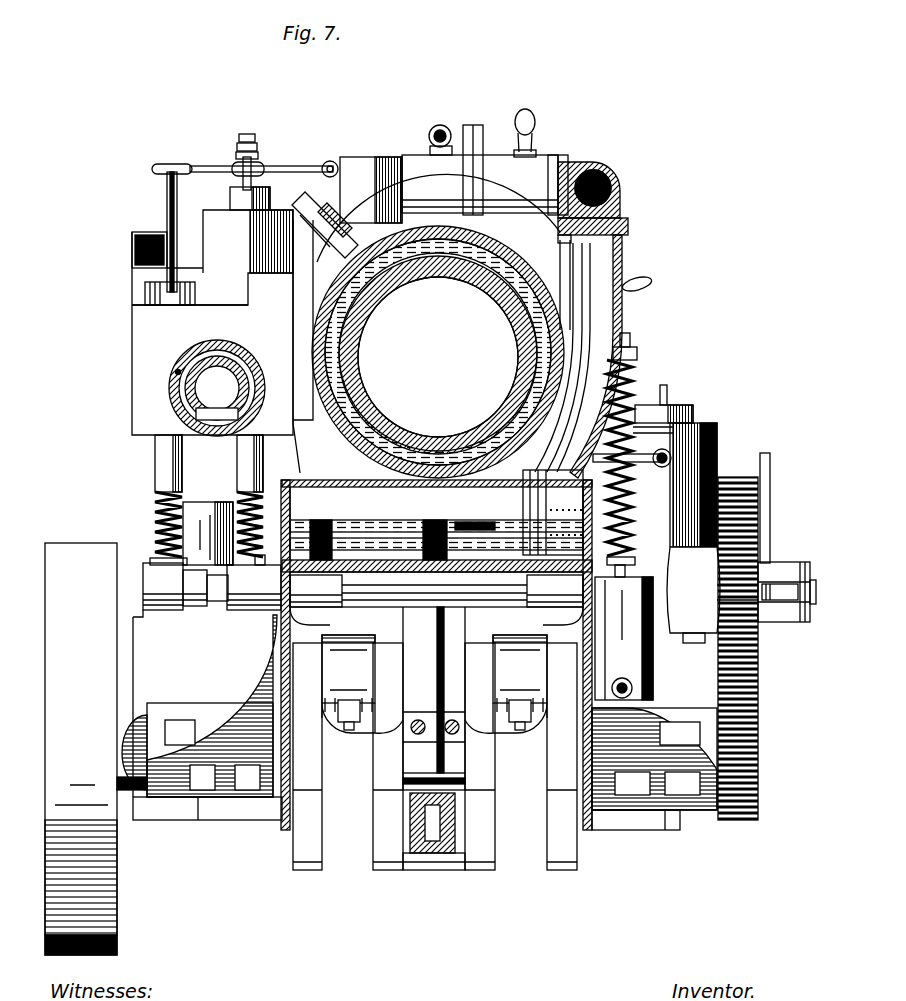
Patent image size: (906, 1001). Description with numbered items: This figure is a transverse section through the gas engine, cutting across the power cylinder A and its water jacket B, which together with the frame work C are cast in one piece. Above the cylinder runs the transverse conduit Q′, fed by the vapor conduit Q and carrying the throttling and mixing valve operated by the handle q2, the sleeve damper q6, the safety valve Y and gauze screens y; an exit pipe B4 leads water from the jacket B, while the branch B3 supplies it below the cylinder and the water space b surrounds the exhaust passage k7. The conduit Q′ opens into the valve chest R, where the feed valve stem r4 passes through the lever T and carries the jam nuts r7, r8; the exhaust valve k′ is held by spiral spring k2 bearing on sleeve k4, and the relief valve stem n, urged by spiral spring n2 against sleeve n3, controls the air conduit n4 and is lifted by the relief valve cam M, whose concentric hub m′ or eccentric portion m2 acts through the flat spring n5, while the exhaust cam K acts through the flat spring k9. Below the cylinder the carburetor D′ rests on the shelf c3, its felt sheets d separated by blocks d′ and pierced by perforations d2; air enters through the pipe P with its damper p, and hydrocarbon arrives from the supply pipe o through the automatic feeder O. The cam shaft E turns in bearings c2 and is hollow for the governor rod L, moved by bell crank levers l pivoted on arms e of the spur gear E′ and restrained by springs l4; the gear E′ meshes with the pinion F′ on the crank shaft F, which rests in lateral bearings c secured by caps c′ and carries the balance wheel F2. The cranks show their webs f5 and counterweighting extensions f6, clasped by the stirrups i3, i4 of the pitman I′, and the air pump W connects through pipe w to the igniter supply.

The lever T is at (245, 159).
The valve stem r4 is at (246, 134).
The jam nut r8 is at (257, 145).
The jam nut r7 is at (259, 154).
The valve stem n is at (170, 238).
The air conduit n4 is at (132, 250).
The valve chest R is at (212, 311).
The exhaust passage k7 is at (217, 388).
The water space b is at (177, 371).
The frame work C is at (432, 515).
The safety valve Y is at (371, 190).
The transverse conduit Q′ is at (425, 206).
The handle q2 is at (515, 159).
The exit pipe B4 is at (442, 129).
The sleeve damper q6 is at (533, 133).
The vapor conduit Q is at (600, 198).
The pipe P is at (578, 356).
The damper p is at (637, 274).
The water jacket B is at (162, 388).
The cylinder A is at (438, 357).
The sleeve n3 is at (161, 463).
The sleeve k4 is at (261, 463).
The spiral spring n2 is at (153, 503).
The spiral spring k2 is at (236, 503).
The flat spring n5 is at (150, 564).
The exhaust valve k′ is at (208, 533).
The concentric hub m′ is at (163, 586).
The eccentric portion m2 is at (205, 584).
The exhaust cam K is at (254, 587).
The flat spring k9 is at (267, 556).
The relief valve cam M is at (207, 715).
The cam shaft E is at (214, 613).
The carburetor D′ is at (436, 655).
The block d′ is at (448, 532).
The sheet of felt d is at (390, 531).
The perforation d2 is at (489, 523).
The gauze screen y is at (553, 512).
The crank shaft F is at (436, 589).
The bearing c2 is at (436, 591).
The shelf c3 is at (388, 586).
The web extension f6 is at (435, 756).
The stirrup i3 is at (348, 669).
The stirrup i4 is at (520, 669).
The web f5 is at (432, 724).
The pitman I′ is at (500, 826).
The automatic feeder O is at (675, 466).
The water supply pipe branch B3 is at (632, 450).
The air pump W is at (624, 638).
The pipe w is at (633, 688).
The spring l4 is at (712, 595).
The spur gear E′ is at (733, 475).
The pinion F′ is at (758, 772).
The supply pipe o is at (773, 508).
The arm e is at (784, 593).
The bell crank lever l is at (780, 594).
The governor rod L is at (819, 594).
The lateral bearing c is at (425, 749).
The cap c′ is at (232, 812).
The balance wheel F2 is at (96, 749).